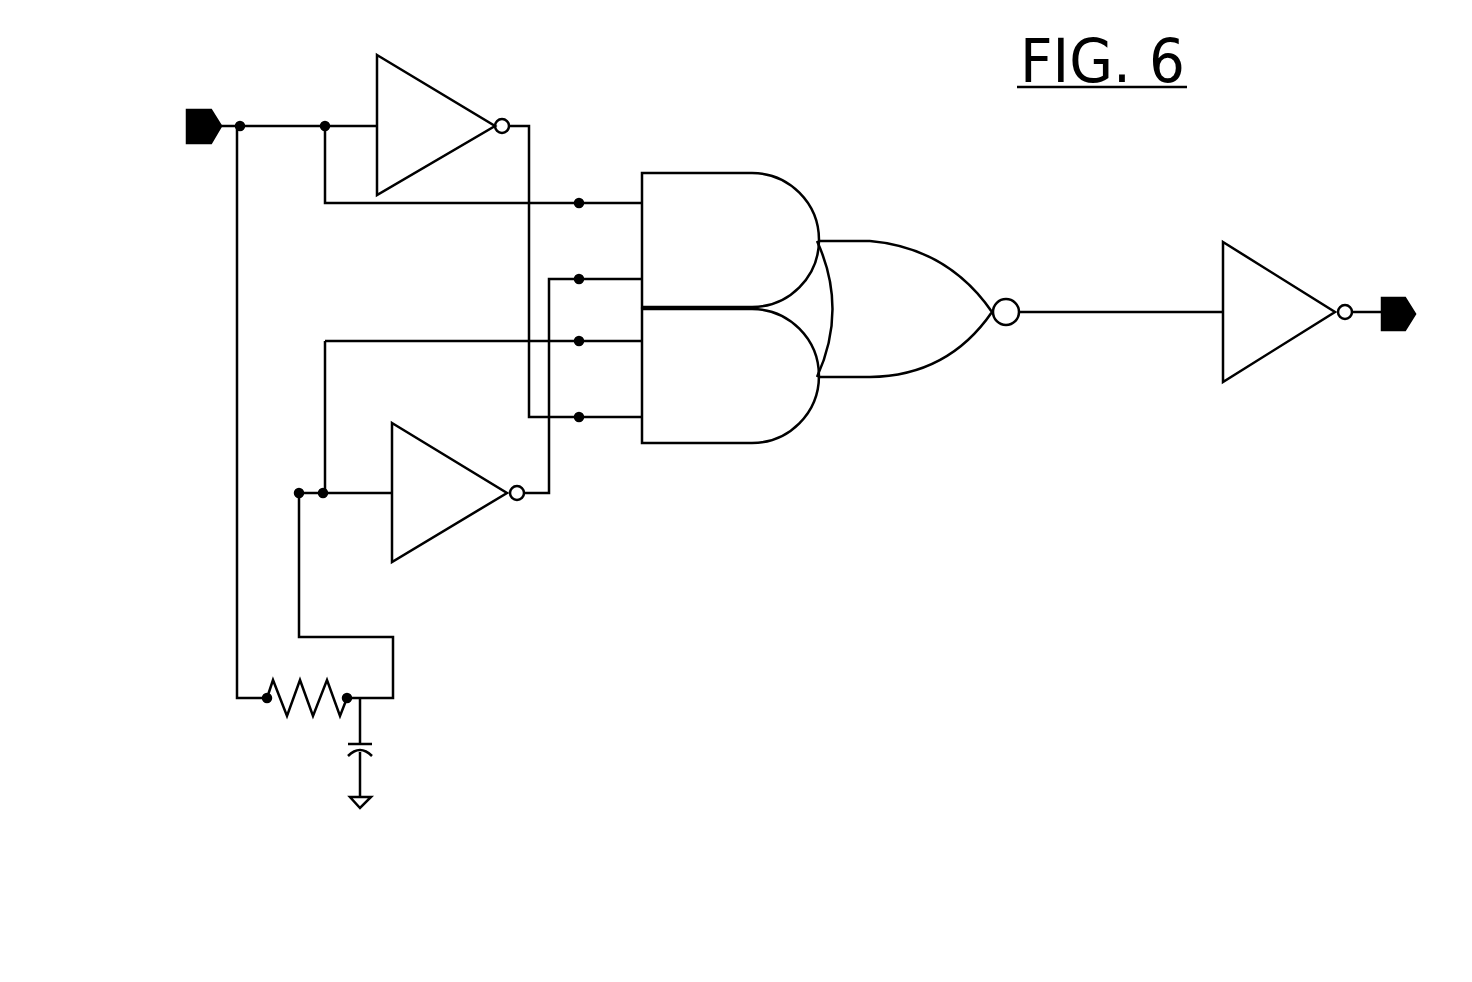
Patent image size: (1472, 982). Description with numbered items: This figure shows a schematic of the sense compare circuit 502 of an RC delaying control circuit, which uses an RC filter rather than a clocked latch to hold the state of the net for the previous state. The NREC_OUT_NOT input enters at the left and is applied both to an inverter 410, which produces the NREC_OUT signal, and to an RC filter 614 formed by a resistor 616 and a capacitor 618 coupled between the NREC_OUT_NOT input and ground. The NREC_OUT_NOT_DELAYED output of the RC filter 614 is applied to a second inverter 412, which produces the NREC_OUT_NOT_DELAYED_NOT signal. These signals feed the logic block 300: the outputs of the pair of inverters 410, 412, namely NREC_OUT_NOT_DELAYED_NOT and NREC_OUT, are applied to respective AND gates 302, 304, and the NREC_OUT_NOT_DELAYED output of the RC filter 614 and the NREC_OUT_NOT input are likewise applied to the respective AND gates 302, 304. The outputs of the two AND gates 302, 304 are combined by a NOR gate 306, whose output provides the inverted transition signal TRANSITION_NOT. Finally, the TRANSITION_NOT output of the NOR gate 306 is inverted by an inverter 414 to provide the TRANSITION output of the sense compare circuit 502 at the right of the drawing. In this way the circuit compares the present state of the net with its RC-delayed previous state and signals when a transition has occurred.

The combination logic block 300 is at (823, 197).
The AND gate 302 is at (756, 240).
The AND gate 304 is at (756, 376).
The NOR gate 306 is at (918, 309).
The inverter 410 is at (443, 125).
The second inverter 412 is at (458, 492).
The inverter 414 is at (1287, 312).
The sense compare circuit 502 is at (1111, 231).
The RC filter 614 is at (432, 681).
The resistor 616 is at (307, 683).
The capacitor 618 is at (384, 753).